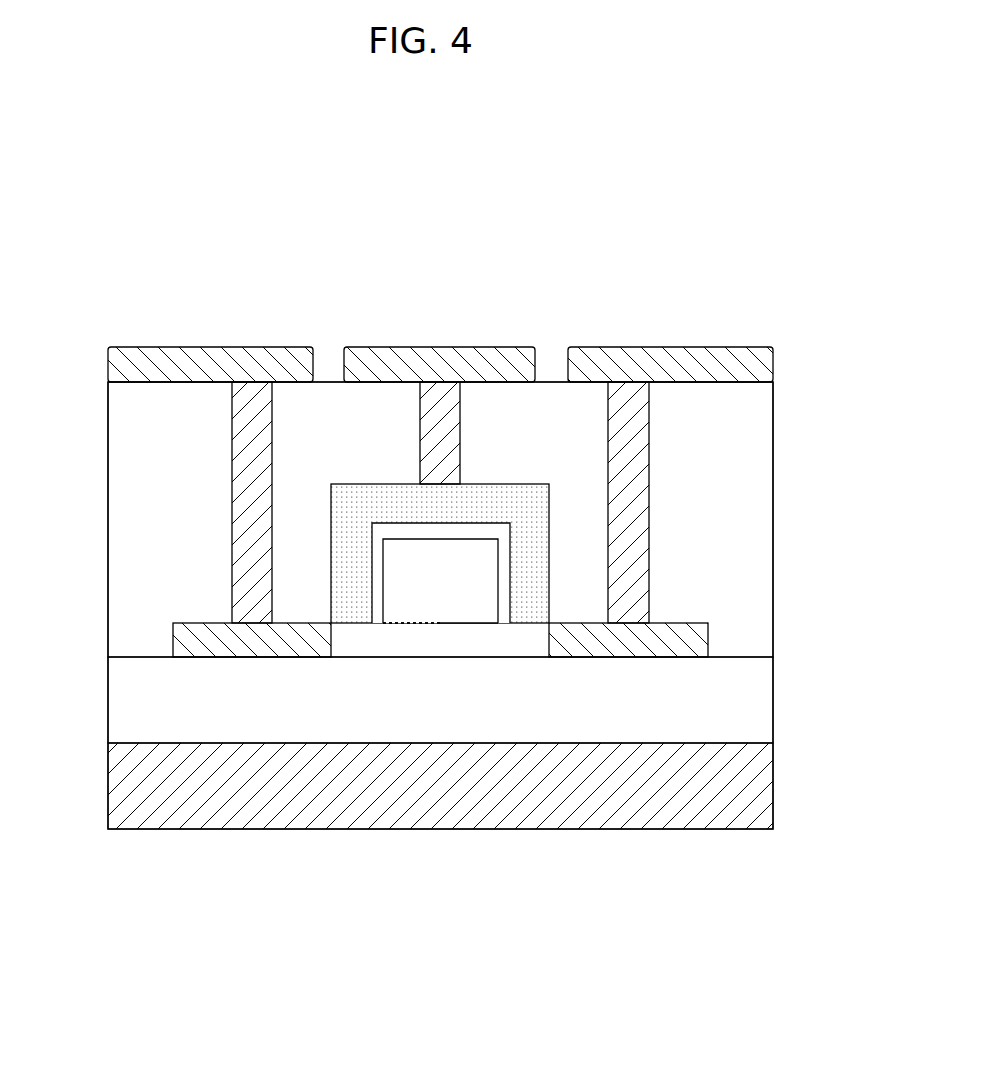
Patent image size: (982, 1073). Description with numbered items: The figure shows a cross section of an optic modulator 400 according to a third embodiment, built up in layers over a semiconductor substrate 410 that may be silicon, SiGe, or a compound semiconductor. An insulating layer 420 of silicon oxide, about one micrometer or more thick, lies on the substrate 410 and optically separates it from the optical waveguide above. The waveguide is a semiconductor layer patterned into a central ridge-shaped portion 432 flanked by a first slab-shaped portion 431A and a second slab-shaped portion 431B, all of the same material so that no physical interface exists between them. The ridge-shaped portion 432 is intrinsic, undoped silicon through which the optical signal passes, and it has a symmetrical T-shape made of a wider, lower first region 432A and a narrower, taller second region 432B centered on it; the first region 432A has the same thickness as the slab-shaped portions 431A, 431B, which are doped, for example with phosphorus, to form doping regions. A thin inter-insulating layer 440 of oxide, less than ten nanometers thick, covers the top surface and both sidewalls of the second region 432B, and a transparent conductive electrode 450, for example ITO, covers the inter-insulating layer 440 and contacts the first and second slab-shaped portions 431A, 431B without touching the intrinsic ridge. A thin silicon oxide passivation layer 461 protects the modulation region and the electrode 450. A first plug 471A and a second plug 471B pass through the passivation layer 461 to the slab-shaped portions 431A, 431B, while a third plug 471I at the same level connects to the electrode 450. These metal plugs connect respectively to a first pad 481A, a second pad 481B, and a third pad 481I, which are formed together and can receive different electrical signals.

The optic modulator 400 is at (724, 287).
The semiconductor substrate 410 is at (750, 791).
The insulating layer 420 is at (750, 703).
The first slab-shaped portion 431A is at (620, 640).
The second slab-shaped portion 431B is at (254, 640).
The ridge-shaped portion 432 is at (490, 893).
The first region 432A is at (371, 640).
The second region 432B is at (438, 575).
The inter-insulating layer 440 is at (510, 553).
The electrode 450 is at (500, 503).
The passivation layer 461 is at (752, 463).
The first plug 471A is at (628, 421).
The second plug 471B is at (256, 489).
The third plug 471I is at (446, 431).
The first pad 481A is at (757, 365).
The second pad 481B is at (130, 362).
The third pad 481I is at (440, 366).